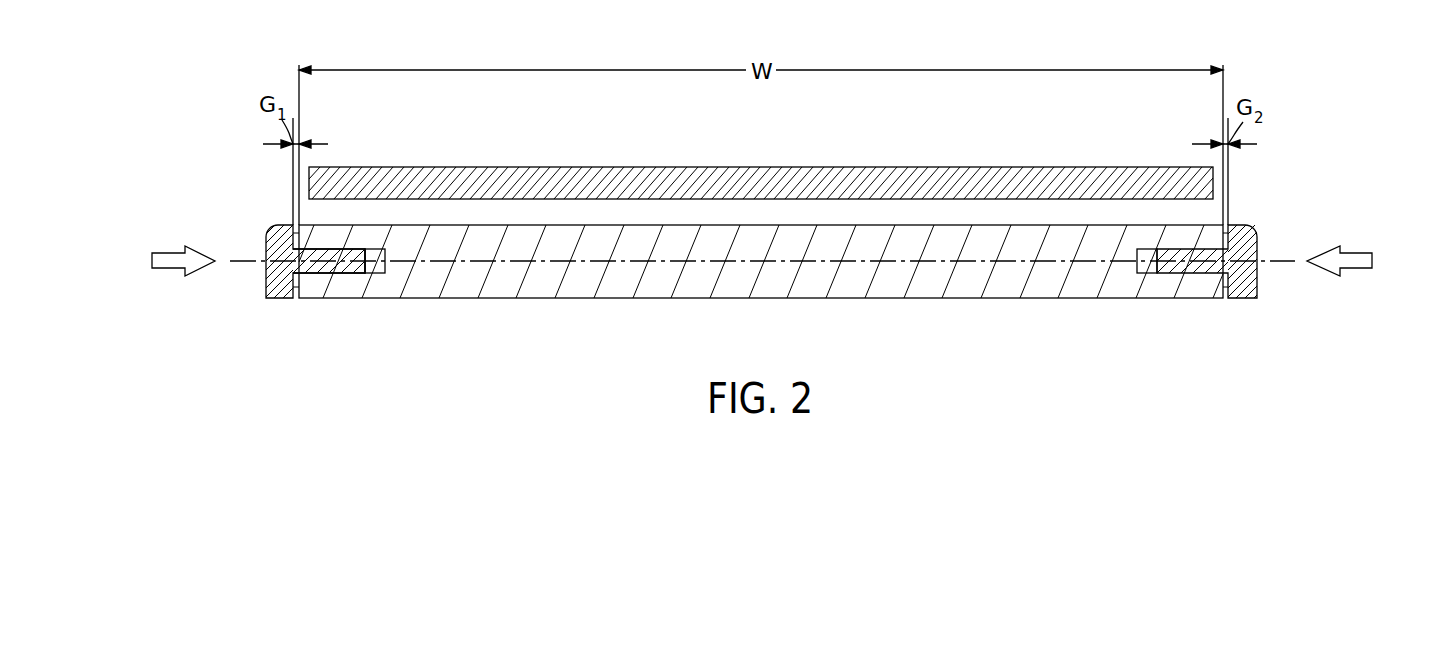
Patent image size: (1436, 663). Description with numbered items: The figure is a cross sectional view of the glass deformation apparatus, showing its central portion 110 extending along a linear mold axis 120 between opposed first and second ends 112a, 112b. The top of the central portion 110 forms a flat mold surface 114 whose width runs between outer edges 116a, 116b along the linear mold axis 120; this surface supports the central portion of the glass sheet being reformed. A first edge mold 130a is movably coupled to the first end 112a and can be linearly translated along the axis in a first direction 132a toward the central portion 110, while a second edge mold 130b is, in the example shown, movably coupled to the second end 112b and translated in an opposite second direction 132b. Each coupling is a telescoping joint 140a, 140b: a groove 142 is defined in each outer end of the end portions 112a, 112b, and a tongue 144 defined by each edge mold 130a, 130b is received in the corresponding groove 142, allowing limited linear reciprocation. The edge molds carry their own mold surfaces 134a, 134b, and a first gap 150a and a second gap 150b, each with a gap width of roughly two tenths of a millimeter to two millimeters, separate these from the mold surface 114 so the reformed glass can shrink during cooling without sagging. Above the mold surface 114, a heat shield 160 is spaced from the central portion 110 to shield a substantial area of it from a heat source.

The central portion 110 is at (583, 298).
The first end 112a is at (355, 313).
The second end 112b is at (1167, 313).
The mold surface 114 is at (822, 222).
The outer edge 116a is at (297, 286).
The outer edge 116b is at (1225, 286).
The linear mold axis 120 is at (977, 263).
The first edge mold 130a is at (272, 213).
The second edge mold 130b is at (1250, 213).
The first direction 132a is at (168, 269).
The second direction 132b is at (1354, 269).
The mold surface 134a is at (265, 230).
The mold surface 134b is at (1257, 230).
The telescoping joint 140a is at (317, 315).
The telescoping joint 140b is at (1205, 315).
The groove 142 is at (385, 268).
The tongue 144 is at (334, 249).
The first gap 150a is at (298, 233).
The second gap 150b is at (1224, 233).
The heat shield 160 is at (1012, 167).